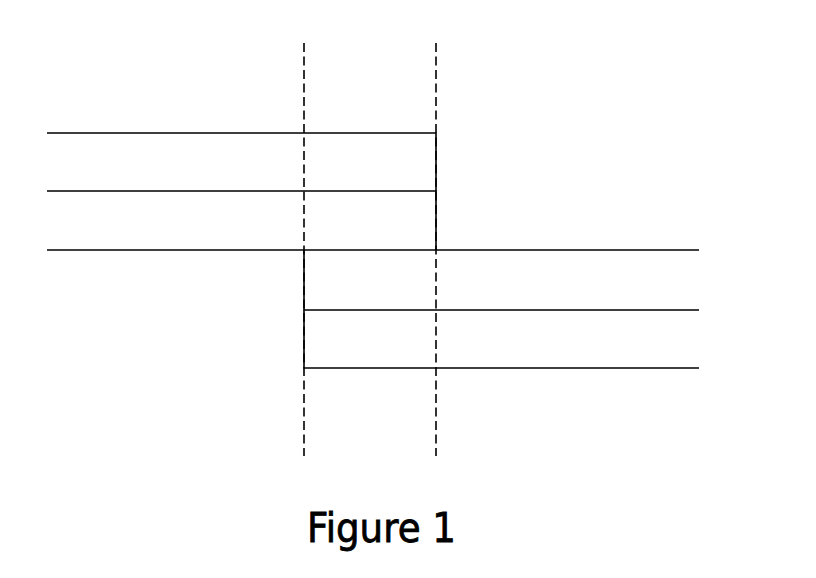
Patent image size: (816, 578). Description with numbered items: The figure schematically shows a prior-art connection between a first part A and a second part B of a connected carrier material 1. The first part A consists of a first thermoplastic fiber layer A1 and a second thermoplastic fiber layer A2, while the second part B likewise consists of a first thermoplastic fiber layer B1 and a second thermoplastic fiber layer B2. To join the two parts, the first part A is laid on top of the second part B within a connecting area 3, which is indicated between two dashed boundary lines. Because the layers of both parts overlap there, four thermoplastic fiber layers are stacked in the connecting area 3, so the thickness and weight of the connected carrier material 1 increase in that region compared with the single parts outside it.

The connected carrier material 1 is at (373, 210).
The connecting area 3 is at (306, 51).
The first part A is at (241, 149).
The first thermoplastic fiber layer A1 is at (241, 207).
The second thermoplastic fiber layer A2 is at (175, 237).
The second part B is at (501, 237).
The first thermoplastic fiber layer B1 is at (501, 280).
The second thermoplastic fiber layer B2 is at (501, 339).